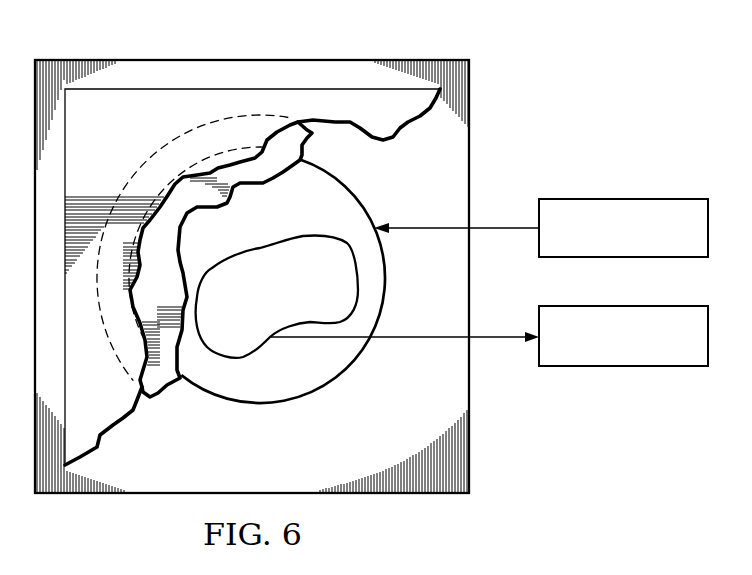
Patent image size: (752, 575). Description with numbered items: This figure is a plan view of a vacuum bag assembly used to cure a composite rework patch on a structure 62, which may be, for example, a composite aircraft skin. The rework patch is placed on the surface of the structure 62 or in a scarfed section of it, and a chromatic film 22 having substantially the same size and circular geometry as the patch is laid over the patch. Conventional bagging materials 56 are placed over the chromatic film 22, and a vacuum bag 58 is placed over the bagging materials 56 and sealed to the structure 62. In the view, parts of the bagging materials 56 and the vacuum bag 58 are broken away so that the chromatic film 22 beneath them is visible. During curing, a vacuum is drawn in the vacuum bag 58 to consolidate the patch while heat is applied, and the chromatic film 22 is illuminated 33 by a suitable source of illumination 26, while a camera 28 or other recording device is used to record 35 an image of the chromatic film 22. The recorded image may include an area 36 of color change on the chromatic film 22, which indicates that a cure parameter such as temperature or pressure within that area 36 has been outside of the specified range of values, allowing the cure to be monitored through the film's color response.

The structure 62 is at (249, 61).
The chromatic film 22 is at (285, 400).
The area of color change 36 is at (300, 237).
The bagging materials 56 is at (178, 259).
The vacuum bag 58 is at (129, 411).
The illumination 33 is at (498, 228).
The recording 35 is at (498, 338).
The source of illumination 26 is at (623, 198).
The camera 28 is at (623, 367).